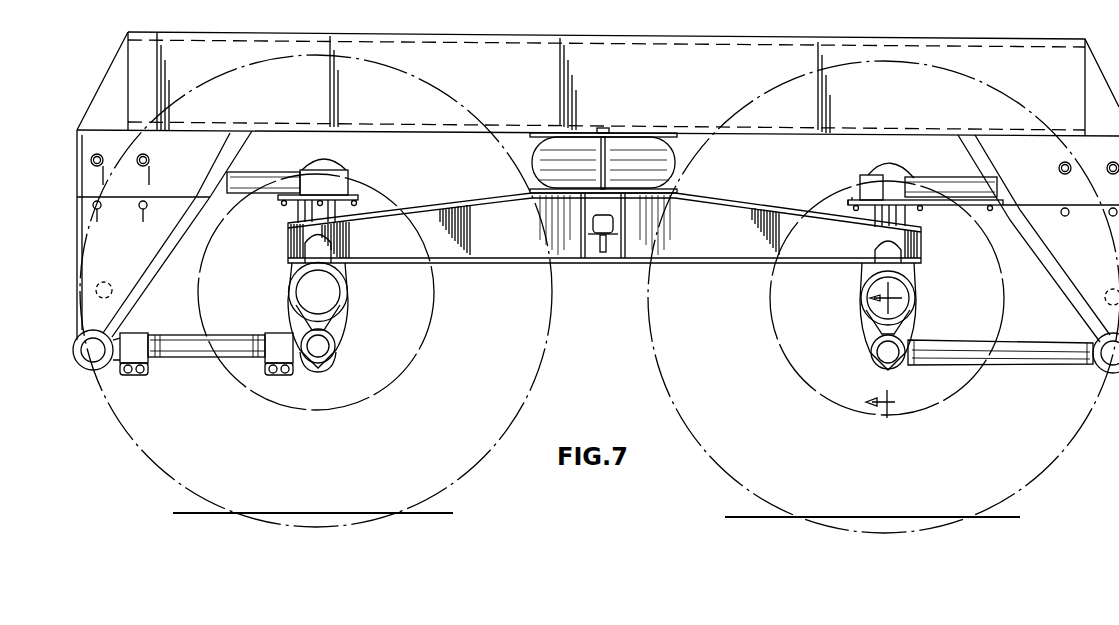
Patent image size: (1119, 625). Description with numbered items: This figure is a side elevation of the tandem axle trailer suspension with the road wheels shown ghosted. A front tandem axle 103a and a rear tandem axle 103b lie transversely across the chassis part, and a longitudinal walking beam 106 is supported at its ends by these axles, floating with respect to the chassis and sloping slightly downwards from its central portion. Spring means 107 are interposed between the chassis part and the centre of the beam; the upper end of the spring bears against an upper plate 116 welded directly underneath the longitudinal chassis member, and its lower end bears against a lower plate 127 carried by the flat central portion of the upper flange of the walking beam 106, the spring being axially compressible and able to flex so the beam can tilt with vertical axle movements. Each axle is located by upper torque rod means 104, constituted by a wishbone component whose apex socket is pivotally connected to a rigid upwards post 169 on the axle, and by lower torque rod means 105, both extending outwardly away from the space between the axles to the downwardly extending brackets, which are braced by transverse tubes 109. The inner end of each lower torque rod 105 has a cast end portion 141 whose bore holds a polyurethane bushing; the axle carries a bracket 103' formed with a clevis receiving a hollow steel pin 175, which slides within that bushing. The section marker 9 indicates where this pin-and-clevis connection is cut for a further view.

The section line 9- 9 is at (884, 351).
The front tandem axle 103a is at (335, 298).
The rear tandem axle 103b is at (905, 282).
The axle bracket 103' is at (341, 346).
The upper torque rod means 104 is at (258, 170).
The lower torque rod means 105 is at (248, 366).
The walking beam 106 is at (492, 262).
The spring means 107 is at (680, 182).
The transverse tube 109 is at (107, 298).
The upper plate 116 is at (648, 132).
The lower plate 127 is at (688, 195).
The cast end portion 141 is at (128, 376).
The upwards extension or post 169 is at (850, 205).
The hollow steel pin 175 is at (328, 362).